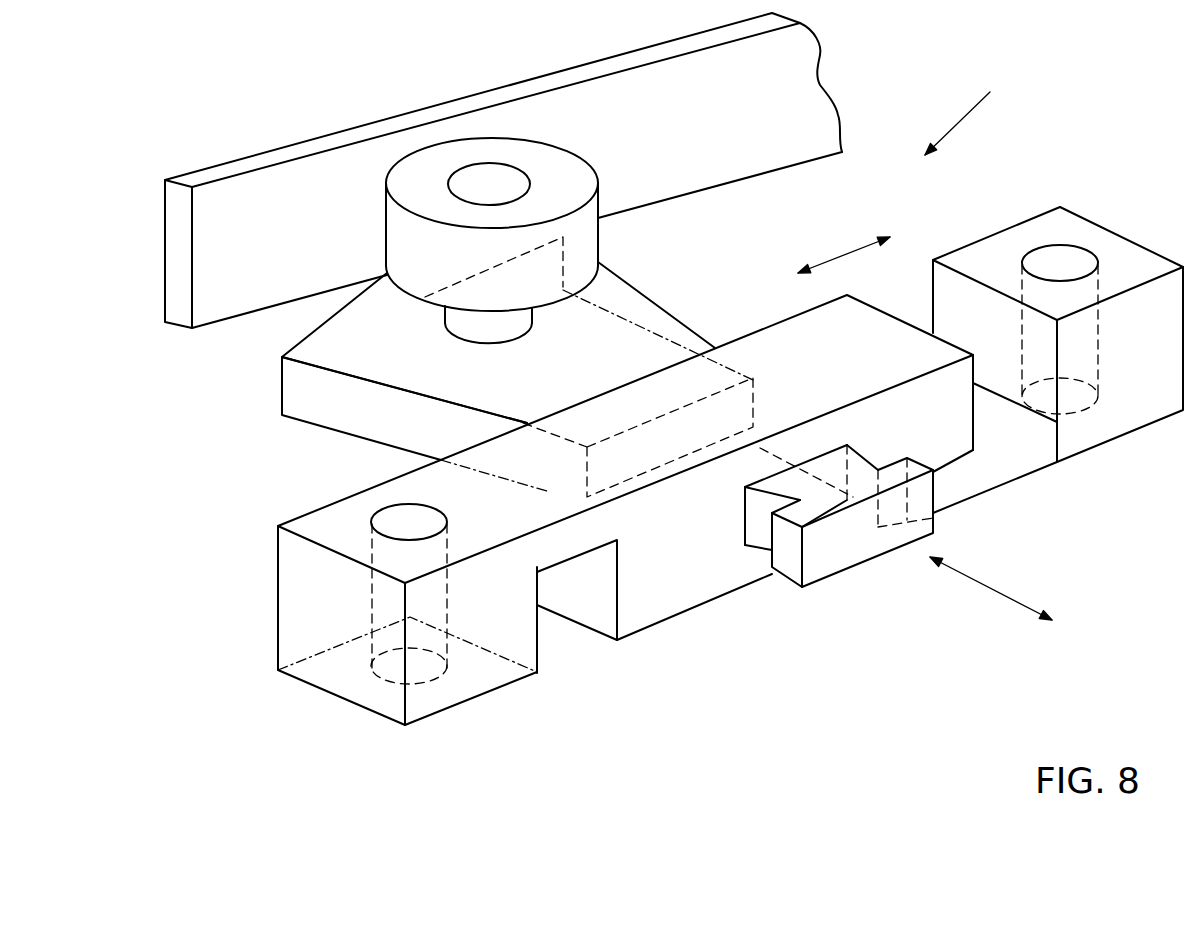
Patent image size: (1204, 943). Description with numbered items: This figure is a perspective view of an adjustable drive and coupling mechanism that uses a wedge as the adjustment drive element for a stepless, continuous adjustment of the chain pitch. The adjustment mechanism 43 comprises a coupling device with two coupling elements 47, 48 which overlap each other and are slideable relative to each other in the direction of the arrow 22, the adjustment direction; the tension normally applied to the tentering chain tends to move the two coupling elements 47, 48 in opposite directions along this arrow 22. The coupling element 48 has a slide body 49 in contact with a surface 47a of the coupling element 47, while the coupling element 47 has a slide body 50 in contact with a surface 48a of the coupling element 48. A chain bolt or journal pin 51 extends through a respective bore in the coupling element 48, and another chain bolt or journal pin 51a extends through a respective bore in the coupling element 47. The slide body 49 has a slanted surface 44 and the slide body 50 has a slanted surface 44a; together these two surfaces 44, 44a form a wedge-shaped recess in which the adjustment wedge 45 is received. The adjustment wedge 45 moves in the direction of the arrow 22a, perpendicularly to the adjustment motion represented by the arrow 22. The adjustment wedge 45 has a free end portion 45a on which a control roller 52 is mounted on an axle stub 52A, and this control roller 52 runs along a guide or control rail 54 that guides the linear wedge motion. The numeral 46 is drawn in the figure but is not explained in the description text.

The arrow 22 is at (840, 258).
The arrow 22a is at (968, 592).
The adjustment mechanism 43 is at (968, 109).
The slanted surface 44 is at (773, 390).
The slanted surface 44a is at (620, 450).
The adjustment wedge 45 is at (630, 313).
The free end portion 45a is at (320, 346).
The slide insert block 46 is at (782, 545).
The coupling element 47 is at (1138, 400).
The surface 47a is at (995, 428).
The coupling element 48 is at (470, 680).
The surface 48a is at (563, 560).
The slide body 49 is at (945, 455).
The slide body 50 is at (683, 572).
The chain bolt or journal pin 51 is at (378, 520).
The chain bolt or journal pin 51a is at (1060, 250).
The control roller 52 is at (422, 157).
The axle stub 52A is at (455, 320).
The guide or control rail 54 is at (235, 188).